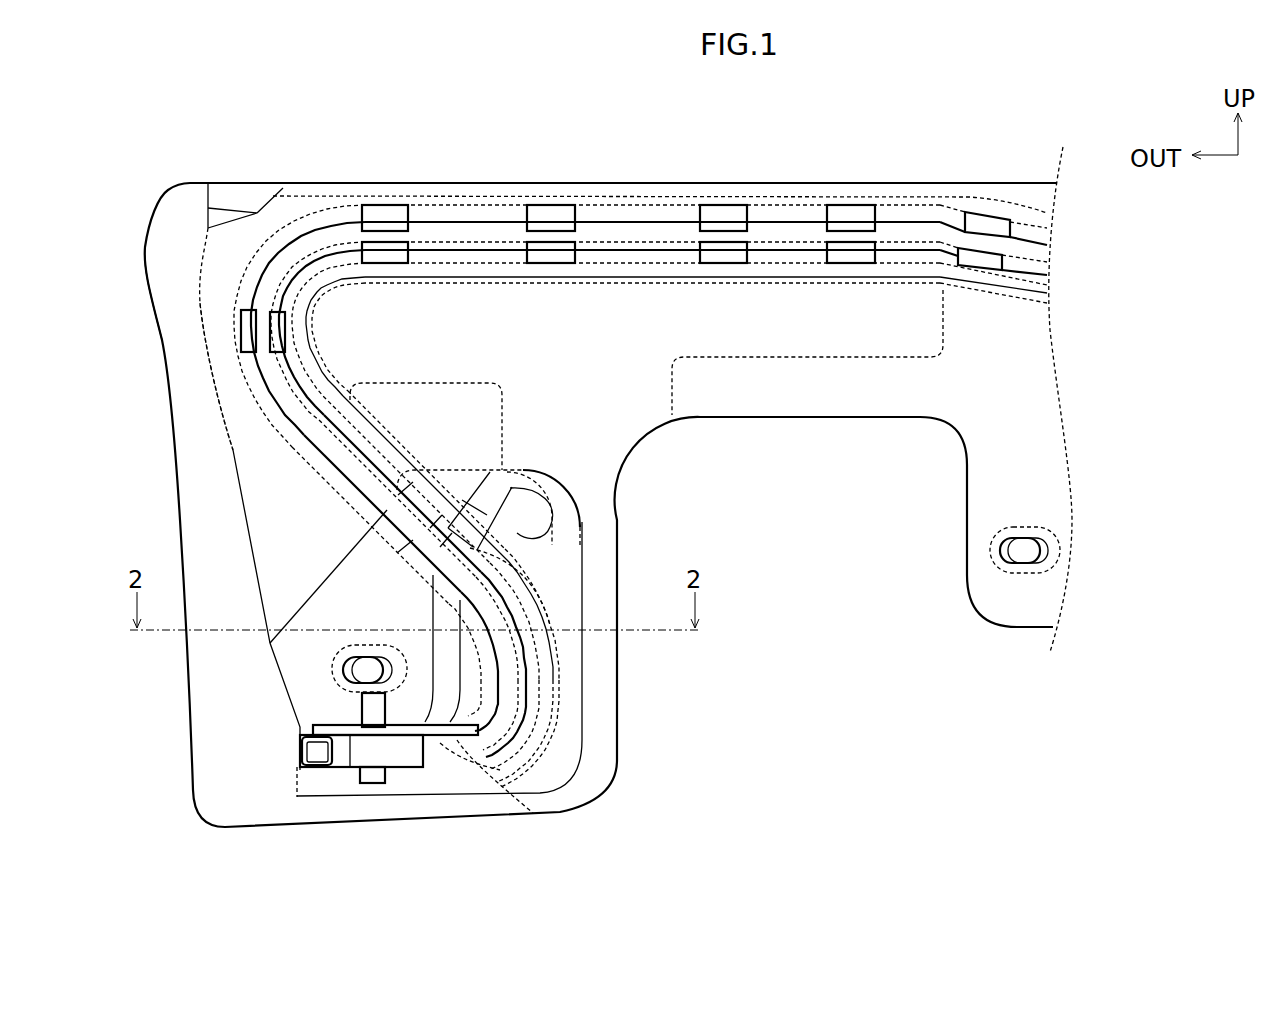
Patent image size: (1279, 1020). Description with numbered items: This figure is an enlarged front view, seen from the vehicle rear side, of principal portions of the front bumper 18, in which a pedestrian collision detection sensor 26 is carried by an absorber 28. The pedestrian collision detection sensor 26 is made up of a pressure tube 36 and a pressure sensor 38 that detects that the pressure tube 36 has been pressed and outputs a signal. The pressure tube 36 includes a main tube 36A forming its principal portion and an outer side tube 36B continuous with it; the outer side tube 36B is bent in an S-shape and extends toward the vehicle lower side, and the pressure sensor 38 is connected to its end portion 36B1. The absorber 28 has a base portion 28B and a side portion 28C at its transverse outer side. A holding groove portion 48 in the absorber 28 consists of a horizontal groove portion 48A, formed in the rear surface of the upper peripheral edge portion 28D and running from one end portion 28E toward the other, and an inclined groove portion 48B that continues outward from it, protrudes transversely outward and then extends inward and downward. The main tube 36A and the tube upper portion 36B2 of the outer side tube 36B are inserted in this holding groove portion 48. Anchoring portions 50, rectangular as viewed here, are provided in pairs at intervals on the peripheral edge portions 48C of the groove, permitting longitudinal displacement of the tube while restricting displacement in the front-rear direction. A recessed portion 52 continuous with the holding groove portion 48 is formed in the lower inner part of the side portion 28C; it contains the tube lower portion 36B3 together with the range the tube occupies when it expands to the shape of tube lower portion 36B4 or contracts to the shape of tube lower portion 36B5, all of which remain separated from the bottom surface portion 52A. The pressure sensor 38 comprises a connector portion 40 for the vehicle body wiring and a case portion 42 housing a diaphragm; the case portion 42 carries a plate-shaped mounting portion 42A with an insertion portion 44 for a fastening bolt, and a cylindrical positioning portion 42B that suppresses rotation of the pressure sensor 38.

The front bumper 18 is at (562, 158).
The pedestrian collision detection sensor 26 is at (562, 483).
The absorber 28 is at (868, 172).
The base portion 28B is at (995, 185).
The side portion 28C is at (300, 185).
The peripheral edge portion 28D is at (790, 205).
The end portion 28E is at (215, 250).
The pressure tube 36 is at (562, 482).
The main tube 36A is at (650, 232).
The outer side tube 36B is at (398, 537).
The end portion 36B1 is at (433, 745).
The tube upper portion 36B2 is at (257, 363).
The tube lower portion 36B3 is at (510, 673).
The tube lower portion 36B4 is at (527, 603).
The tube lower portion 36B5 is at (450, 606).
The pressure sensor 38 is at (325, 723).
The connector portion 40 is at (310, 760).
The case portion 42 is at (339, 761).
The mounting portion 42A is at (380, 735).
The positioning portion 42B is at (357, 703).
The insertion portion 44 is at (505, 790).
The holding groove portion 48 is at (784, 291).
The horizontal groove portion 48A is at (938, 228).
The inclined groove portion 48B is at (365, 455).
The peripheral edge portion 48C is at (1043, 228).
The anchoring portion 50 is at (387, 250).
The recessed portion 52 is at (526, 503).
The bottom surface portion 52A is at (545, 487).